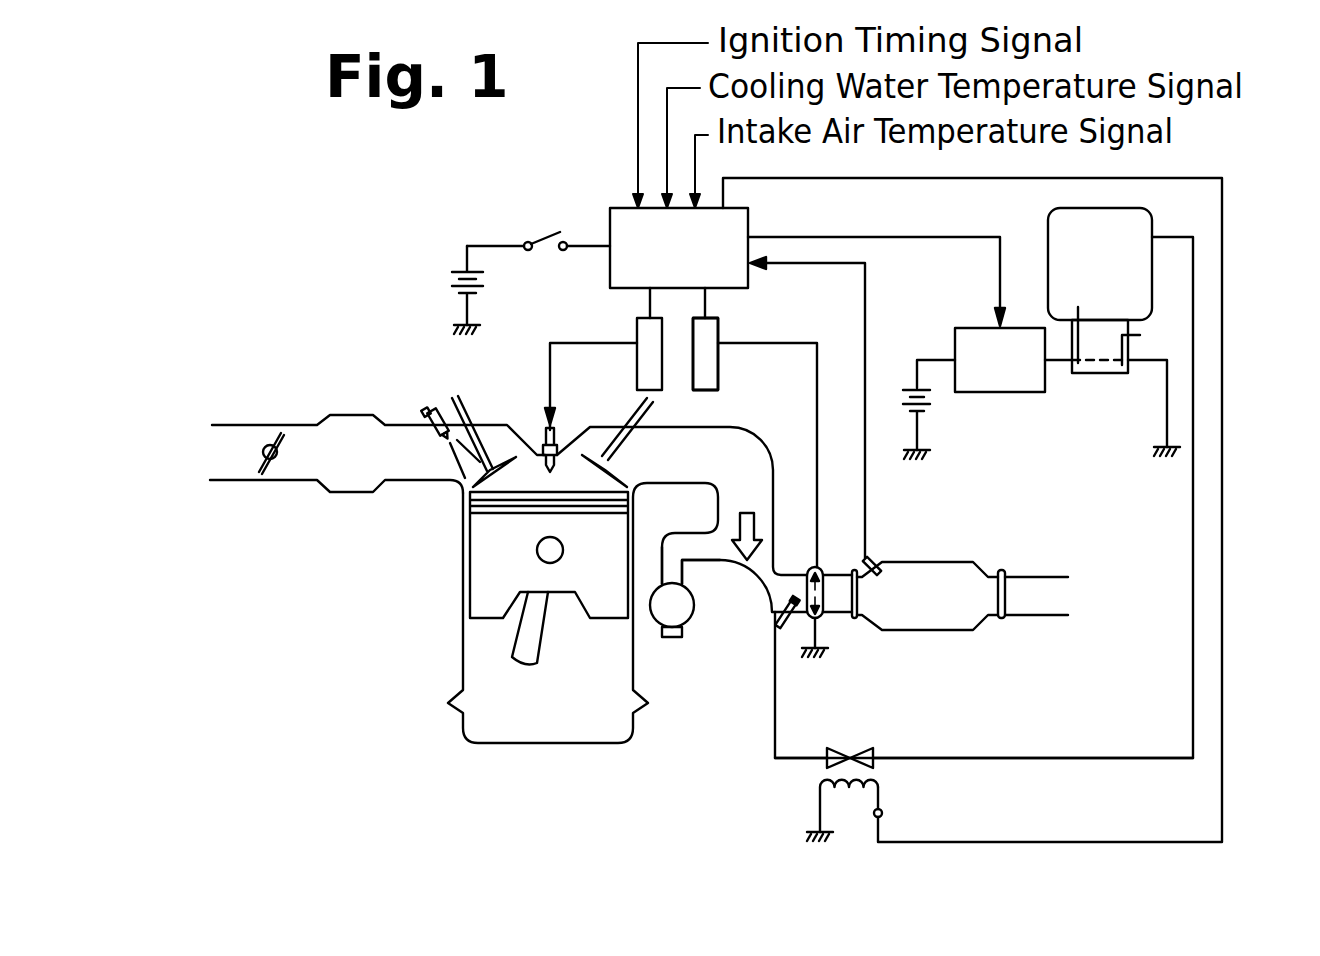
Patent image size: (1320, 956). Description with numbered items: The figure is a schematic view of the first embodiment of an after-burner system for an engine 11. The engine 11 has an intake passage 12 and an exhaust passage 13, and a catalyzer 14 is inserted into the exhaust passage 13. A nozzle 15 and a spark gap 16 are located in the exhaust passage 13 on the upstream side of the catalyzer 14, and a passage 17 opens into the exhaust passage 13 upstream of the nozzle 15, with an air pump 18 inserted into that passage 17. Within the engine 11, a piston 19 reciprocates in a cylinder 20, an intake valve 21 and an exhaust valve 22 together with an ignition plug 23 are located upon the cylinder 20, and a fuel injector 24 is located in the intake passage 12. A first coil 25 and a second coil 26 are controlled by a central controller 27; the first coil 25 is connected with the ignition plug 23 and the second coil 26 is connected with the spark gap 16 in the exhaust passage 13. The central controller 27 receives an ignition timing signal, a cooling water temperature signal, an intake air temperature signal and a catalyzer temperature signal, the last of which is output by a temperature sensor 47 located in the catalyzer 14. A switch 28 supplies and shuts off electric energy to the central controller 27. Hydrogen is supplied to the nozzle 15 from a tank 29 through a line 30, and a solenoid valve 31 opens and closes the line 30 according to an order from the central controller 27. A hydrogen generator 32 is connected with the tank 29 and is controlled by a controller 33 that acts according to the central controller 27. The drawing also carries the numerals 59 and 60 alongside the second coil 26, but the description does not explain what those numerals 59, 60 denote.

The engine 11 is at (545, 613).
The intake passage 12 is at (292, 482).
The exhaust passage 13 is at (770, 452).
The catalyzer 14 is at (946, 562).
The nozzle 15 is at (777, 628).
The spark gap 16 is at (822, 600).
The passage 17 is at (680, 543).
The air pump 18 is at (686, 620).
The piston 19 is at (480, 537).
The cylinder 20 is at (471, 658).
The intake valve 21 is at (500, 455).
The exhaust valve 22 is at (592, 453).
The ignition plug 23 is at (540, 440).
The fuel injector 24 is at (430, 418).
The first coil 25 is at (637, 335).
The second coil 26 is at (718, 333).
The signal processing circuit 59 is at (705, 354).
The signal processing circuit 60 is at (705, 354).
The central controller 27 is at (610, 212).
The switch 28 is at (548, 235).
The tank 29 is at (1048, 218).
The line 30 is at (975, 758).
The solenoid valve 31 is at (856, 740).
The hydrogen generator 32 is at (1100, 373).
The controller 33 is at (1000, 392).
The temperature sensor 47 is at (872, 558).